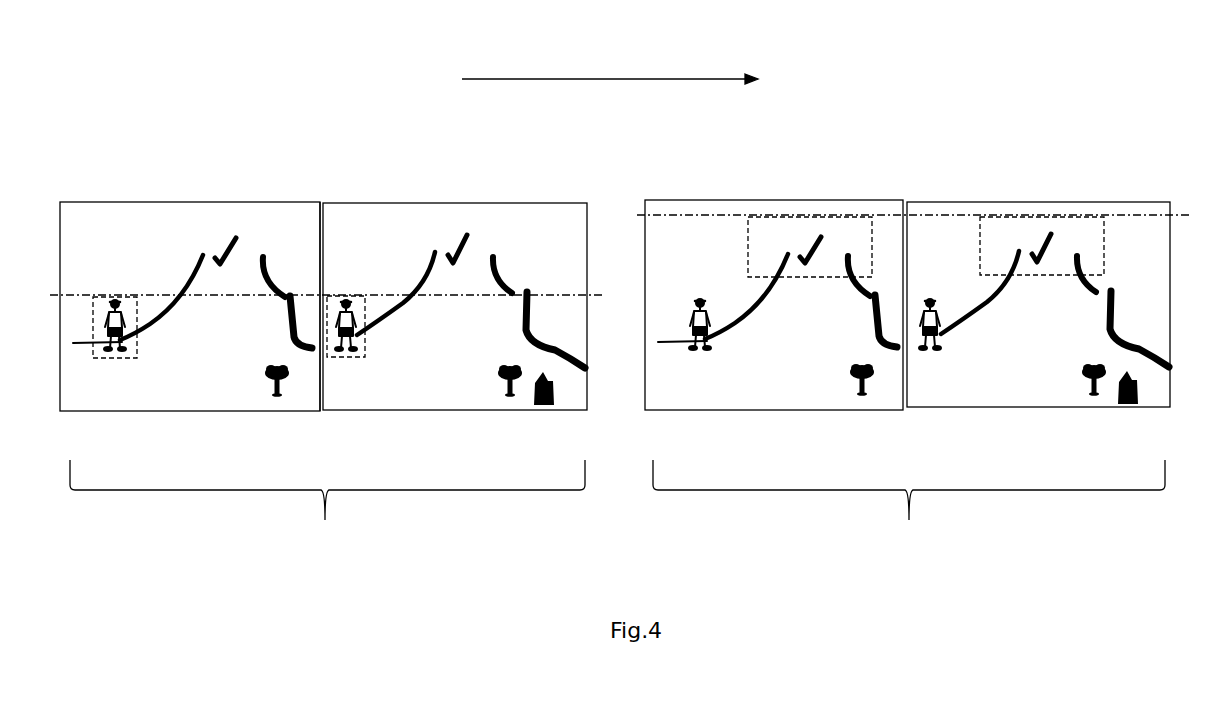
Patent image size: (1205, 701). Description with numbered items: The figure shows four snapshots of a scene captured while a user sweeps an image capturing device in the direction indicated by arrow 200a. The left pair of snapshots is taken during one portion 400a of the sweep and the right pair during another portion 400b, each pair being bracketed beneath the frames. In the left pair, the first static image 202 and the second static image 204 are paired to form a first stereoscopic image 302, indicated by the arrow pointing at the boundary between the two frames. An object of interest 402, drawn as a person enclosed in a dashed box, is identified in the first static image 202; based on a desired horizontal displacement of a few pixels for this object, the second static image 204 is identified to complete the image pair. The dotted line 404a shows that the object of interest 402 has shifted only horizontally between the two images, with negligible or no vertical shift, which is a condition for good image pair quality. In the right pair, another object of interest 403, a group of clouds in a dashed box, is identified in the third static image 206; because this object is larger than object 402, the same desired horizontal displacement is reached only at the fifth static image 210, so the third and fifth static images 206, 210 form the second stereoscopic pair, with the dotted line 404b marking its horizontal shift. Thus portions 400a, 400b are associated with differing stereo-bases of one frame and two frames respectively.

The arrow 200a is at (575, 73).
The first stereoscopic image 302 is at (317, 180).
The first static image 202 is at (213, 411).
The second static image 204 is at (455, 412).
The third static image 206 is at (798, 411).
The fifth static image 210 is at (1038, 411).
The object of interest 402 is at (138, 345).
The object of interest 403 is at (747, 252).
The dotted line 404a is at (553, 292).
The dotted line 404b is at (1128, 213).
The portion of the sweep 400a is at (327, 503).
The another portion of the sweep 400b is at (909, 503).